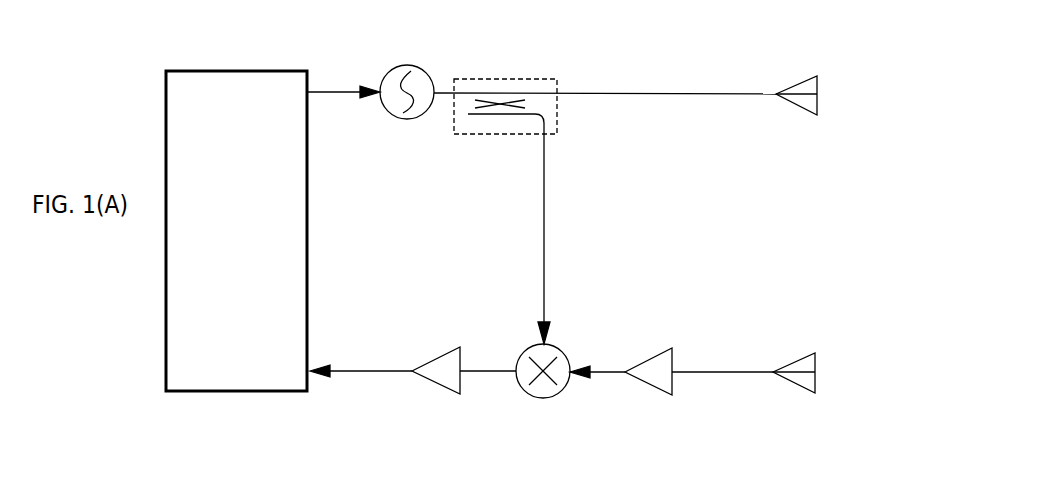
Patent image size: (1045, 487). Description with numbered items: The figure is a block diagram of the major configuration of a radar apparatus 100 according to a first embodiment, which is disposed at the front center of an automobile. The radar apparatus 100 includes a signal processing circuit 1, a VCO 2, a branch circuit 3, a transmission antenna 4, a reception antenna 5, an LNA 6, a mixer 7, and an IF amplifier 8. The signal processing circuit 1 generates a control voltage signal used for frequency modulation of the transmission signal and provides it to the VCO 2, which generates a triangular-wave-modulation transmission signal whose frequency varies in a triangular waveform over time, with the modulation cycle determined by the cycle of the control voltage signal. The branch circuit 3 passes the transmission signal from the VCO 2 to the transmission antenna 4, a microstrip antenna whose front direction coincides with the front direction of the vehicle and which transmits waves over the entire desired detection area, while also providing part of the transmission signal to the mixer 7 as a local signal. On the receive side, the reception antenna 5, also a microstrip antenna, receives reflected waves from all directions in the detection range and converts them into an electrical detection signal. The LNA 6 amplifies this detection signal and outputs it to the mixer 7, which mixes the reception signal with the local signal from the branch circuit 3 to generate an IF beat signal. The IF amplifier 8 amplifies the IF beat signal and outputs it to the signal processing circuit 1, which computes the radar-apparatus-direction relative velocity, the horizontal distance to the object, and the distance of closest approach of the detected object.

The signal processing circuit 1 is at (287, 391).
The VCO 2 is at (427, 112).
The branch circuit 3 is at (557, 126).
The transmission antenna 4 is at (797, 108).
The reception antenna 5 is at (795, 386).
The LNA 6 is at (670, 395).
The mixer 7 is at (557, 397).
The IF amplifier 8 is at (462, 382).
The radar apparatus 100 is at (740, 33).